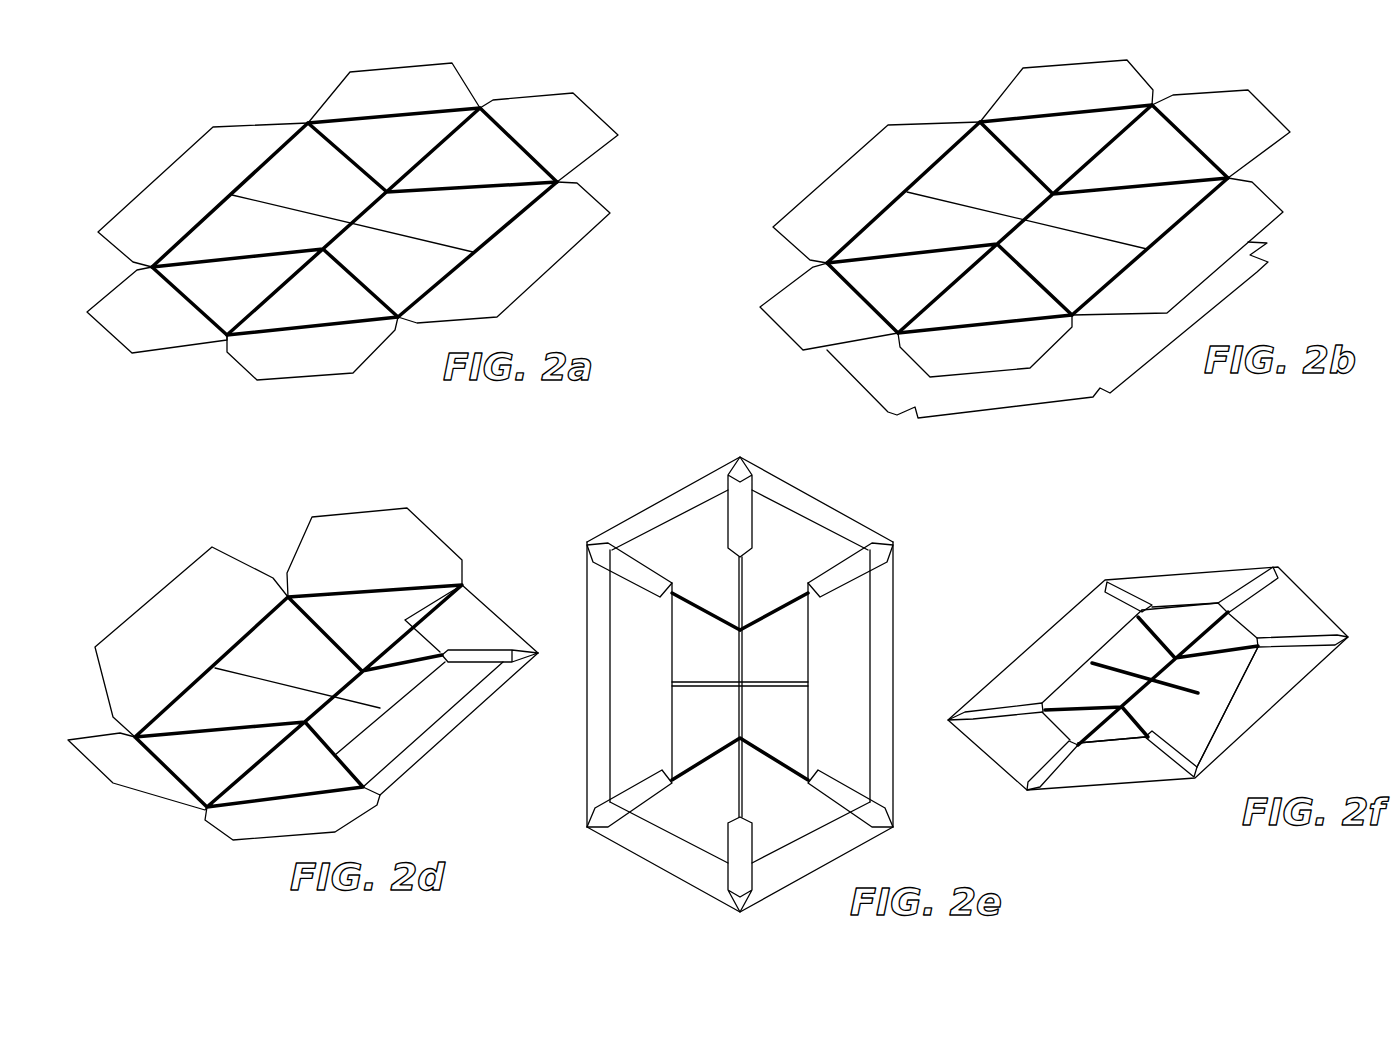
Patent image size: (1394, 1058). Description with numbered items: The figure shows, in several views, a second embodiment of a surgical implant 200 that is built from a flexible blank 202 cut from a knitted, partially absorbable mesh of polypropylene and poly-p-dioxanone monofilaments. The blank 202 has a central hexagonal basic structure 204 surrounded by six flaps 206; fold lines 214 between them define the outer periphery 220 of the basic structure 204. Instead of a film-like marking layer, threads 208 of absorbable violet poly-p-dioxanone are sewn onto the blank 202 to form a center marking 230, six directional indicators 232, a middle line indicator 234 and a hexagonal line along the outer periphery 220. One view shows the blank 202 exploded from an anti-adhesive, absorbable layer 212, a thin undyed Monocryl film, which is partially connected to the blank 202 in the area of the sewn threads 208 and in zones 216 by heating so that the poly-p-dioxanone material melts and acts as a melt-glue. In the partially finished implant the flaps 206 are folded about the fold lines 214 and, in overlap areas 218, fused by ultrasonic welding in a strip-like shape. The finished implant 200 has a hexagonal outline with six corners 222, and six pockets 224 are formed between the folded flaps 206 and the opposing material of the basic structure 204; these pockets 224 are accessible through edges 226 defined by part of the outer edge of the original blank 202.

In FIG. 2e, the surgical implant 200 is at (777, 690).
In FIG. 2f, the surgical implant 200 is at (1160, 678).
In FIG. 2a, the blank 202 is at (385, 224).
In FIG. 2b, the blank 202 is at (1058, 218).
In FIG. 2a, the basic structure 204 is at (278, 240).
In FIG. 2b, the basic structure 204 is at (1002, 191).
In FIG. 2a, the flaps 206 is at (578, 125).
In FIG. 2b, the flaps 206 is at (1250, 213).
In FIG. 2d, the flaps 206 is at (418, 532).
In FIG. 2a, the threads 208 is at (463, 185).
In FIG. 2b, the threads 208 is at (1100, 230).
In FIG. 2d, the threads 208 is at (298, 683).
In FIG. 2b, the anti-adhesive layer 212 is at (1069, 408).
In FIG. 2d, the fold lines 214 is at (453, 730).
In FIG. 2d, the zones 216 is at (427, 737).
In FIG. 2d, the overlap areas 218 is at (490, 652).
In FIG. 2e, the overlap areas 218 is at (735, 510).
In FIG. 2f, the outer periphery 220 is at (1188, 570).
In FIG. 2e, the corners 222 is at (892, 542).
In FIG. 2f, the corners 222 is at (1275, 568).
In FIG. 2f, the pockets 224 is at (1238, 703).
In FIG. 2e, the edges 226 is at (810, 668).
In FIG. 2e, the center marking 230 is at (763, 680).
In FIG. 2d, the directional indicators 232 is at (338, 640).
In FIG. 2e, the directional indicators 232 is at (767, 750).
In FIG. 2f, the directional indicators 232 is at (1130, 632).
In FIG. 2e, the middle line indicator 234 is at (708, 680).